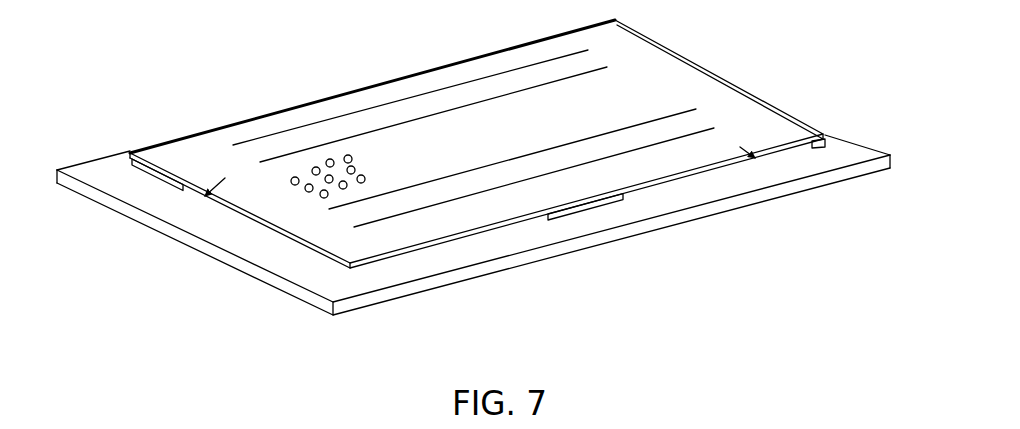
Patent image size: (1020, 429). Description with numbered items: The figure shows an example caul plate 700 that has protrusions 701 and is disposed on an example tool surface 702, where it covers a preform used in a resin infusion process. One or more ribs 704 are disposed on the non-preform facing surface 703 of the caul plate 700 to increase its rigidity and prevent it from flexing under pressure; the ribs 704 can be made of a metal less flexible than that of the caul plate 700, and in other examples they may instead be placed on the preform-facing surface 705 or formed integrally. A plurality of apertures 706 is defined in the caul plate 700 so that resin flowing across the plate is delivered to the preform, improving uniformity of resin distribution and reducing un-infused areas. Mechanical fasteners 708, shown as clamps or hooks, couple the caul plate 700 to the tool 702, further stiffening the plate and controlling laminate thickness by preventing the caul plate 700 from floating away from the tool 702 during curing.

The caul plate 700 is at (303, 102).
The protrusions 701 is at (158, 178).
The tool surface 702 is at (303, 298).
The non-preform facing surface 703 is at (730, 103).
The ribs 704 is at (607, 133).
The preform-facing surface 705 is at (804, 148).
The apertures 706 is at (291, 180).
The mechanical fasteners 708 is at (780, 235).